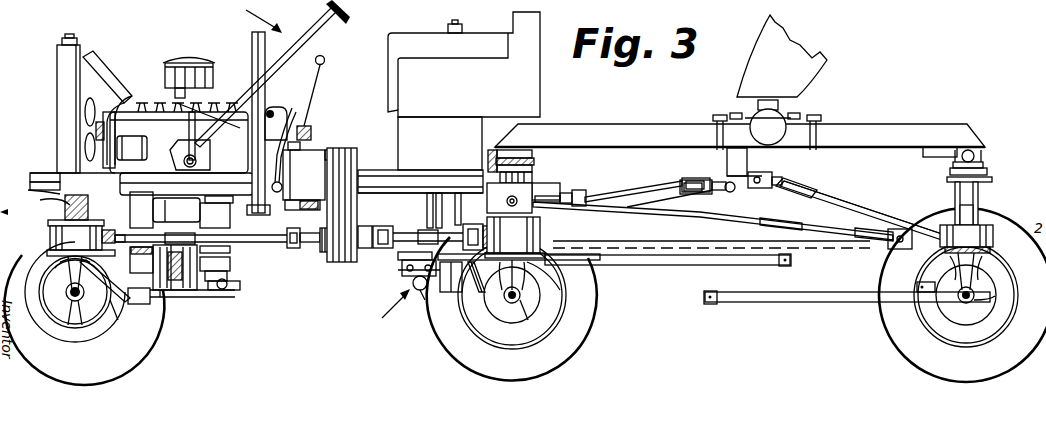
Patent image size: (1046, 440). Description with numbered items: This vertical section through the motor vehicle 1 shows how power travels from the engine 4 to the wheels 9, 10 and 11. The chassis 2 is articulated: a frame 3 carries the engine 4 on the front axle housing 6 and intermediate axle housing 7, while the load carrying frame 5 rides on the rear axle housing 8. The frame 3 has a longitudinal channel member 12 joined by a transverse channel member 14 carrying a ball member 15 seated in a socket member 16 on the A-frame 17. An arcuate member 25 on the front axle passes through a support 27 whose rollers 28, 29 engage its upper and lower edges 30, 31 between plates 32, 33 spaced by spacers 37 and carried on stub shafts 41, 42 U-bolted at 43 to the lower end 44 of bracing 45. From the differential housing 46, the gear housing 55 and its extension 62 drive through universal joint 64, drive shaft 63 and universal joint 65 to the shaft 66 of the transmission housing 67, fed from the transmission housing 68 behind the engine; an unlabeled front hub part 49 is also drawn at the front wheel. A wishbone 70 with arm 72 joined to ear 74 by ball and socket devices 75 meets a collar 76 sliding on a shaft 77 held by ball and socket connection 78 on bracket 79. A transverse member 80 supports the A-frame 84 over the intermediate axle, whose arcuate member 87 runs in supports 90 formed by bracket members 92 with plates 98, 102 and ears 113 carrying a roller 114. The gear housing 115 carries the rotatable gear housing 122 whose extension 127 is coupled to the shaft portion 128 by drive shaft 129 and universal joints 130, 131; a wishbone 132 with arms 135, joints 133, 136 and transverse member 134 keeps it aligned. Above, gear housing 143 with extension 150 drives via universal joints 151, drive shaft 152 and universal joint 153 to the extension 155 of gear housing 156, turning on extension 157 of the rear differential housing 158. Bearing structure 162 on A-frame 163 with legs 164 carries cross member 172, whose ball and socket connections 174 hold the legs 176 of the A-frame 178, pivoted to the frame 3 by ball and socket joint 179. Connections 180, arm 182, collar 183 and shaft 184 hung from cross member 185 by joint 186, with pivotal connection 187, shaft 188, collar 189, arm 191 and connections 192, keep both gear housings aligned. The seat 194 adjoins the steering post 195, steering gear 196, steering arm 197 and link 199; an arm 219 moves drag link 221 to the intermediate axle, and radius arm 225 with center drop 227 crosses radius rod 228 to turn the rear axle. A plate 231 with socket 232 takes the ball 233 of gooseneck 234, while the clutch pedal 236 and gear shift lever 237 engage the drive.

The motor vehicle 1 is at (257, 16).
The chassis 2 is at (498, 148).
The frame 3 is at (53, 172).
The engine 4 is at (150, 112).
The load carrying frame 5 is at (935, 124).
The front axle housing 6 is at (68, 318).
The intermediate axle housing 7 is at (512, 305).
The rear axle housing 8 is at (958, 305).
The wheels 9 is at (96, 378).
The wheels 10 is at (554, 372).
The wheels 11 is at (901, 366).
The channel member 12 is at (35, 168).
The transverse channel member 14 is at (45, 180).
The ball member 15 is at (50, 190).
The spherical socket member 16 is at (55, 200).
The A-frame 17 is at (50, 232).
The arcuate member 25 is at (176, 290).
The support structure 27 is at (205, 292).
The roller 28 is at (177, 220).
The roller 29 is at (172, 292).
The upper end of arcuate member 30 is at (178, 235).
The lower end of arcuate member 31 is at (118, 292).
The plate 32 is at (162, 235).
The plate 33 is at (230, 215).
The spacers 37 is at (166, 296).
The stub shaft 41 is at (141, 259).
The stub shaft 42 is at (230, 268).
The U-bolts 43 is at (228, 279).
The lower end of bracing 44 is at (230, 252).
The bracing 45 is at (160, 197).
The differential housing 46 is at (50, 278).
The fork 49 is at (82, 318).
The housing 55 is at (48, 242).
The housing extension 62 is at (118, 215).
The drive shaft 63 is at (237, 200).
The universal joint 64 is at (128, 197).
The universal joint 65 is at (293, 249).
The shaft 66 is at (306, 252).
The housing 67 is at (356, 152).
The transmission housing 68 is at (313, 152).
The wishbone connection 70 is at (117, 322).
The arm 72 is at (82, 292).
The ear 74 is at (50, 257).
The ball and socket devices 75 is at (60, 270).
The collar 76 is at (142, 304).
The shaft 77 is at (196, 298).
The ball and socket connection 78 is at (234, 291).
The bracket 79 is at (228, 284).
The transverse member 80 is at (533, 170).
The A-frame 84 is at (480, 180).
The arcuate member 87 is at (413, 285).
The support 90 is at (386, 310).
The bracket member 92 is at (427, 215).
The plate 98 is at (402, 272).
The plate 102 is at (456, 284).
The ears 113 is at (444, 292).
The roller 114 is at (424, 302).
The gear housing 115 is at (530, 318).
The gear housing 122 is at (545, 234).
The housing extension 127 is at (462, 224).
The shaft portion 128 is at (360, 262).
The drive shaft 129 is at (425, 233).
The universal joint 130 is at (385, 226).
The universal joint 131 is at (482, 275).
The wishbone 132 is at (484, 292).
The ball and socket joint 133 is at (398, 272).
The transverse member 134 is at (398, 256).
The arms 135 is at (508, 290).
The ball and socket joints 136 is at (548, 282).
The gear housing 143 is at (540, 186).
The gear housing extension 150 is at (582, 190).
The universal joints 151 is at (590, 196).
The drive shaft 152 is at (675, 214).
The universal joint 153 is at (888, 248).
The gear housing extension 155 is at (950, 210).
The gear housing 156 is at (993, 237).
The extension 157 is at (995, 260).
The differential gear housing 158 is at (995, 298).
The bearing structure 162 is at (948, 182).
The A-frame 163 is at (990, 190).
The diverging legs 164 is at (990, 213).
The cross member 172 is at (950, 172).
The ball and socket connection 174 is at (978, 160).
The leg 176 is at (950, 124).
The A-frame 178 is at (712, 125).
The ball and socket joint 179 is at (535, 152).
The ball and socket connections 180 is at (542, 218).
The arm 182 is at (662, 195).
The collar 183 is at (685, 178).
The shaft 184 is at (715, 203).
The cross member 185 is at (752, 170).
The ball and socket joint 186 is at (735, 192).
The pivotal connection 187 is at (772, 182).
The shaft 188 is at (778, 196).
The collar 189 is at (815, 195).
The arm 191 is at (875, 214).
The ball and socket connections 192 is at (915, 252).
The seat 194 is at (430, 56).
The post 195 is at (323, 29).
The steering gear structure 196 is at (200, 147).
The steering arm 197 is at (188, 132).
The link 199 is at (207, 97).
The arm 219 is at (288, 200).
The drag link 221 is at (375, 195).
The radius arm 225 is at (705, 305).
The center drop portion 227 is at (848, 304).
The radius arm 228 is at (705, 267).
The plate 231 is at (818, 122).
The socket 232 is at (790, 112).
The ball 233 is at (748, 110).
The gooseneck structure 234 is at (800, 40).
The clutch pedal 236 is at (293, 108).
The gear shift lever 237 is at (324, 61).